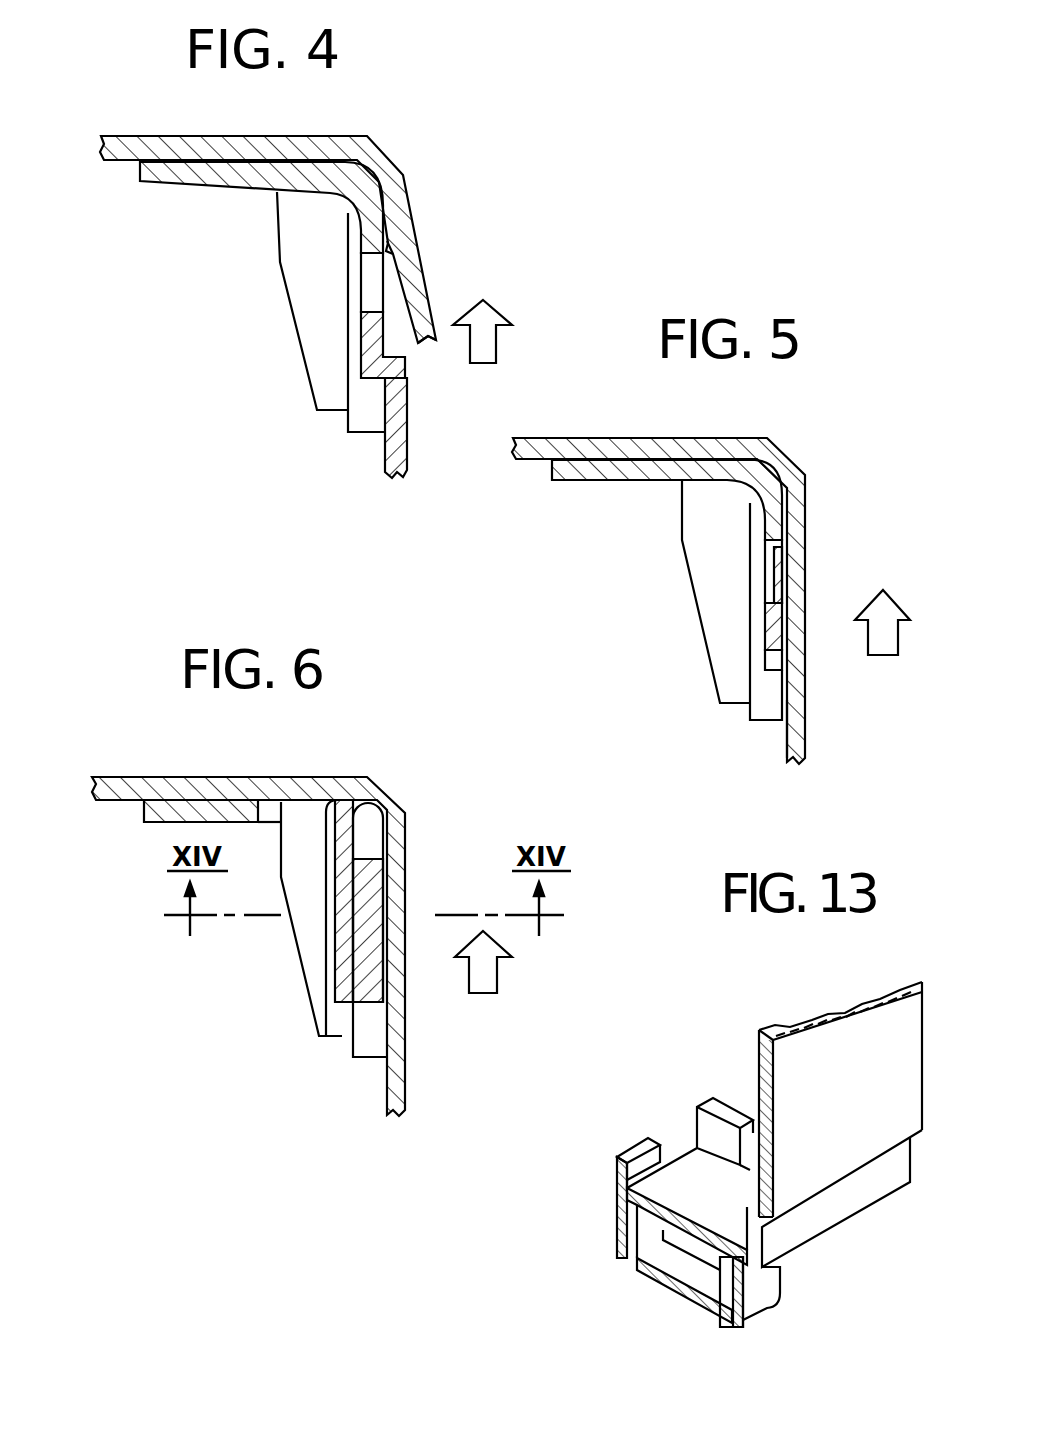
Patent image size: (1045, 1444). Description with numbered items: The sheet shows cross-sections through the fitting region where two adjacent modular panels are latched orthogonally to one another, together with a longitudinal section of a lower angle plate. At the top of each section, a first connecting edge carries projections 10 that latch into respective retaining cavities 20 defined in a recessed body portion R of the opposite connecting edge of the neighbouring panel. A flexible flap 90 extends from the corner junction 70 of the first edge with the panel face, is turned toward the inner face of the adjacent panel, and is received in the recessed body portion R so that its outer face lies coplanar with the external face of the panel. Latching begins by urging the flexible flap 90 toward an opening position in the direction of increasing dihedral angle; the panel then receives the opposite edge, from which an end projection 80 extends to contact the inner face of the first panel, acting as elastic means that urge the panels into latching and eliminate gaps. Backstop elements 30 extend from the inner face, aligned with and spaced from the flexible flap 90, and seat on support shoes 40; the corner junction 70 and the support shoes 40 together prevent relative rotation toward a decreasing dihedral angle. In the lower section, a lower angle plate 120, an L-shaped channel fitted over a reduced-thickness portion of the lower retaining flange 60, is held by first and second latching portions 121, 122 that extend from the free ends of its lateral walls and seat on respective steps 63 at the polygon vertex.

In FIG. 4, the projection 10 is at (387, 252).
In FIG. 5, the projection 10 is at (778, 555).
In FIG. 4, the retaining cavity 20 is at (367, 310).
In FIG. 5, the retaining cavity 20 is at (773, 587).
In FIG. 4, the backstop element 30 is at (290, 268).
In FIG. 5, the backstop element 30 is at (700, 573).
In FIG. 6, the backstop element 30 is at (306, 936).
In FIG. 4, the support shoe 40 is at (362, 415).
In FIG. 5, the support shoe 40 is at (735, 685).
In FIG. 6, the support shoe 40 is at (367, 1043).
In FIG. 13, the lower retaining flange 60 is at (680, 1163).
In FIG. 13, the step 63 is at (712, 1303).
In FIG. 4, the corner junction 70 is at (383, 156).
In FIG. 5, the corner junction 70 is at (777, 460).
In FIG. 6, the corner junction 70 is at (372, 797).
In FIG. 4, the end projection 80 is at (200, 173).
In FIG. 5, the end projection 80 is at (577, 483).
In FIG. 6, the end projection 80 is at (155, 818).
In FIG. 4, the flexible flap 90 is at (433, 340).
In FIG. 5, the flexible flap 90 is at (797, 637).
In FIG. 6, the flexible flap 90 is at (396, 863).
In FIG. 4, the recessed body portion R is at (407, 363).
In FIG. 5, the recessed body portion R is at (765, 652).
In FIG. 13, the lower angle plate 120 is at (685, 1216).
In FIG. 13, the first latching portion 121 is at (743, 1273).
In FIG. 13, the second latching portion 122 is at (632, 1188).